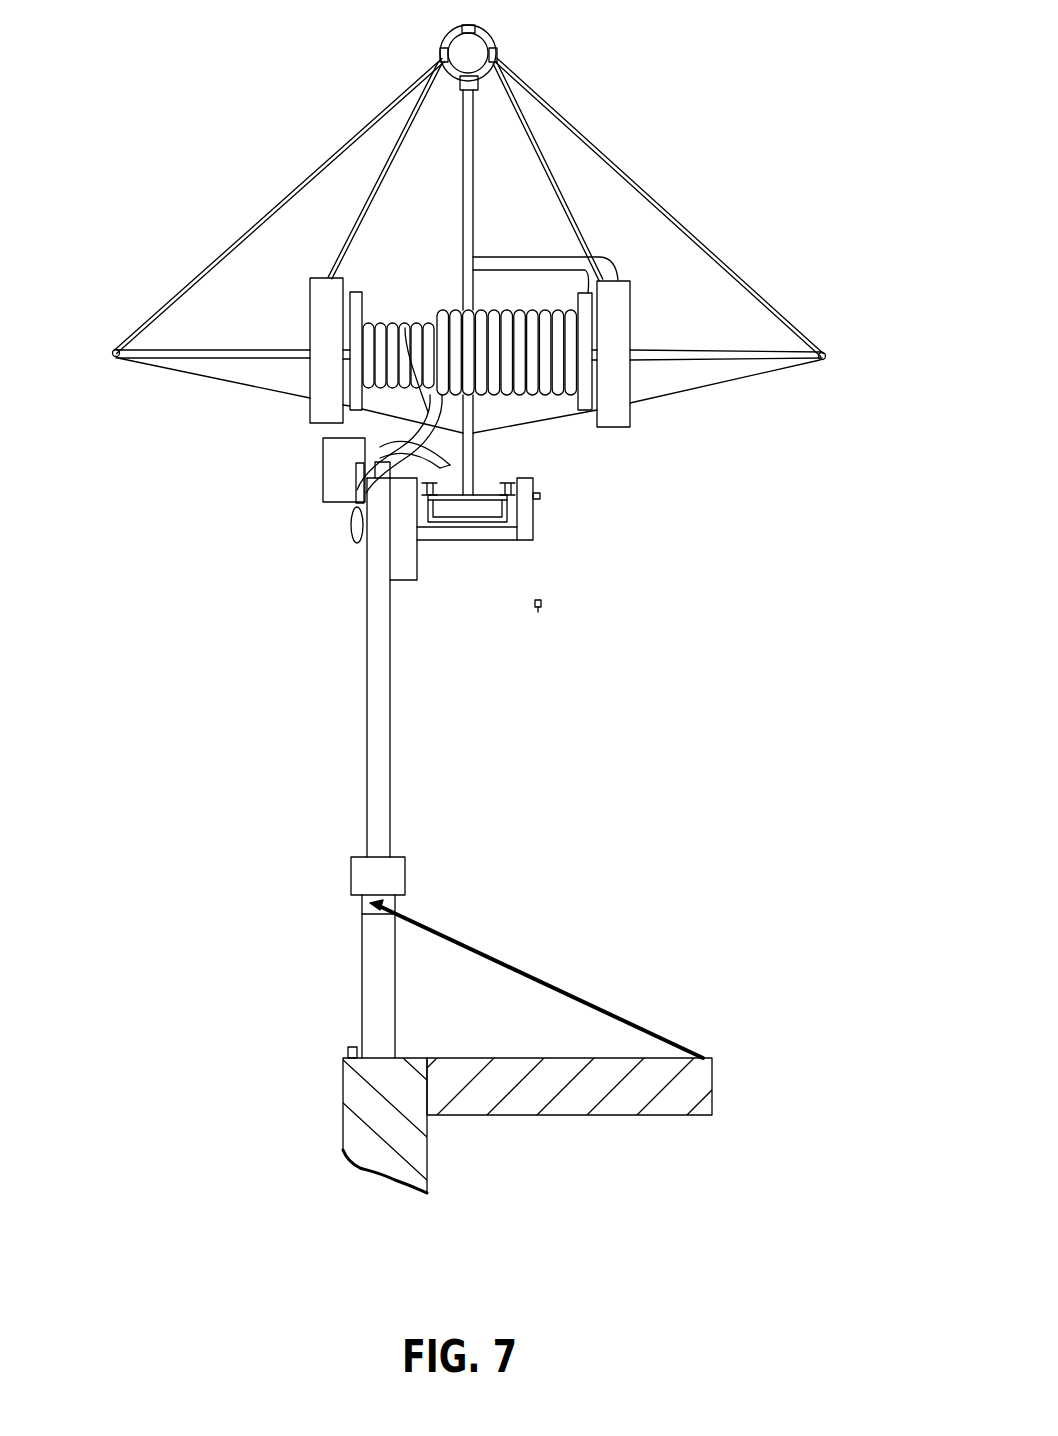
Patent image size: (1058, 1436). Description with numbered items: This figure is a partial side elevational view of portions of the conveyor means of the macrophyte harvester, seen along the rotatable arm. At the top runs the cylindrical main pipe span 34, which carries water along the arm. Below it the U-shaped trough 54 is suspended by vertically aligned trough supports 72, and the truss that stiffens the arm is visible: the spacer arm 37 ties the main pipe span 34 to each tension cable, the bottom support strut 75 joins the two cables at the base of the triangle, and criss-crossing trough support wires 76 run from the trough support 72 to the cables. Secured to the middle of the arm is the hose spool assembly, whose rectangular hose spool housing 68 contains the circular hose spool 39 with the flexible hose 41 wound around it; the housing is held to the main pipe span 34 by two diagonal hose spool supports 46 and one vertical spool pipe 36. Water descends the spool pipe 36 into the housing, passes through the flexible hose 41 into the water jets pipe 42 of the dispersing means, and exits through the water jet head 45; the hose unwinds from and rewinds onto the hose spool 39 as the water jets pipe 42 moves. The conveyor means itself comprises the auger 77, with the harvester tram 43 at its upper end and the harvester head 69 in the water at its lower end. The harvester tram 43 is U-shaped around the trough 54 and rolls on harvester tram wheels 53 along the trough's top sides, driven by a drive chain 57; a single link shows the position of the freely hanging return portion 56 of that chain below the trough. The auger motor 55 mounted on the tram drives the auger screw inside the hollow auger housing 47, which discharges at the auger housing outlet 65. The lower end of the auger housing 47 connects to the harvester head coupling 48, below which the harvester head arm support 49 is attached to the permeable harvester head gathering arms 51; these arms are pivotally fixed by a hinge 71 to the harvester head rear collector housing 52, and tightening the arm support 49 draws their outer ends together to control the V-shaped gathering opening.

The main pipe span 34 is at (468, 52).
The spool pipe 36 is at (517, 257).
The spacer arm 37 is at (262, 220).
The hose spool 39 is at (606, 268).
The flexible hose 41 is at (405, 326).
The water jets pipe 42 is at (355, 505).
The harvester tram 43 is at (427, 535).
The water jet head 45 is at (353, 543).
The diagonal hose spool supports 46 is at (395, 153).
The auger housing 47 is at (377, 690).
The harvester head coupling 48 is at (360, 872).
The harvester head arm support 49 is at (585, 1003).
The harvester head gathering arms 51 is at (520, 1117).
The harvester head rear collector housing 52 is at (343, 1130).
The harvester tram wheels 53 is at (507, 482).
The trough 54 is at (503, 513).
The auger motor 55 is at (333, 472).
The return portion of harvester drive chain 56 is at (540, 610).
The drive chain 57 is at (540, 496).
The auger housing outlet 65 is at (447, 452).
The hose spool housing 68 is at (632, 343).
The harvester head 69 is at (312, 1070).
The hinge 71 is at (350, 1047).
The trough support 72 is at (472, 450).
The bottom support strut 75 is at (820, 362).
The trough support wires 76 is at (237, 372).
The auger 77 is at (344, 662).